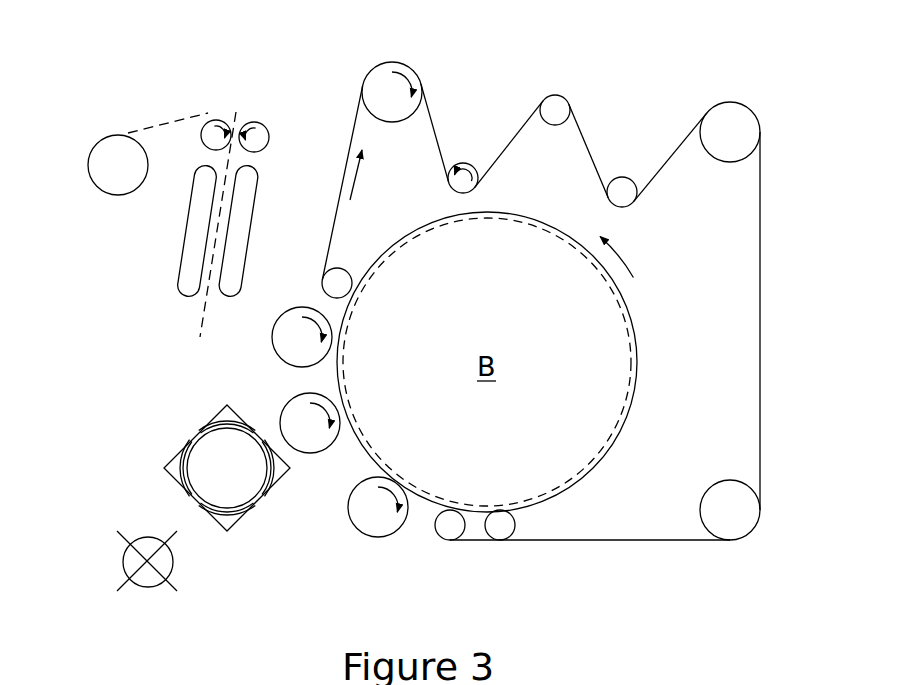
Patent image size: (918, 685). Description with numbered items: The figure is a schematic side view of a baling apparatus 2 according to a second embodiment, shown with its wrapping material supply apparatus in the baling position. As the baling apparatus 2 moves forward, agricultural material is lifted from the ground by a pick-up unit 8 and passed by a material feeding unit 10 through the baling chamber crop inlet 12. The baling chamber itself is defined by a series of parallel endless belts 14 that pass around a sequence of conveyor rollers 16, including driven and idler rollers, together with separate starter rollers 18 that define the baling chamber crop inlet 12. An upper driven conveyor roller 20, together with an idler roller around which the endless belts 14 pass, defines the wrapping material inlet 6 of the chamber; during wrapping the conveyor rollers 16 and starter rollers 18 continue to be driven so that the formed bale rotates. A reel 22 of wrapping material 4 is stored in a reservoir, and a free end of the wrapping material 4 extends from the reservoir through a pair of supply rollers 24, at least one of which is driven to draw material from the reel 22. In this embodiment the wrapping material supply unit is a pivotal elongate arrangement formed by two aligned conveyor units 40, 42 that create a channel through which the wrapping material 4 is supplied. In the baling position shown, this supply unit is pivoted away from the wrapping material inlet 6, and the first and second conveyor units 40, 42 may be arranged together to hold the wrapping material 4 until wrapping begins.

The baling apparatus 2 is at (605, 76).
The wrapping material 4 is at (203, 312).
The wrapping material inlet 6 is at (328, 306).
The pick-up unit 8 is at (122, 559).
The material feeding unit 10 is at (349, 461).
The baling chamber crop inlet 12 is at (208, 448).
The endless belts 14 is at (762, 310).
The conveyor rollers 16 is at (412, 72).
The starter rollers 18 is at (340, 433).
The upper driven conveyor roller 20 is at (338, 363).
The reel 22 is at (100, 186).
The supply rollers 24 is at (257, 122).
The first conveyor unit 40 is at (258, 212).
The second conveyor unit 42 is at (188, 228).